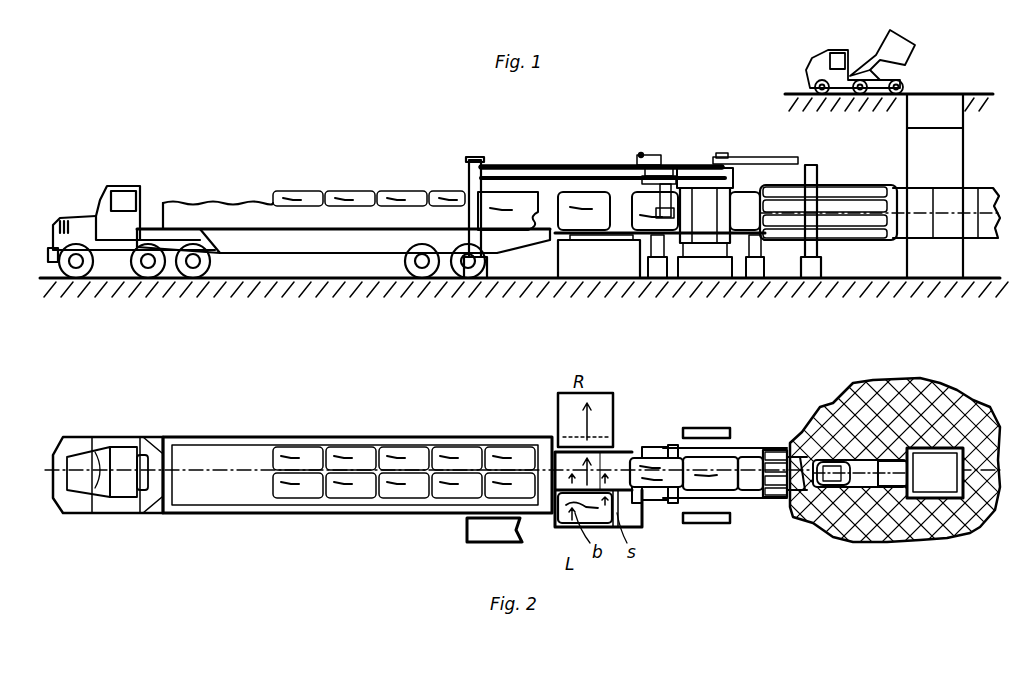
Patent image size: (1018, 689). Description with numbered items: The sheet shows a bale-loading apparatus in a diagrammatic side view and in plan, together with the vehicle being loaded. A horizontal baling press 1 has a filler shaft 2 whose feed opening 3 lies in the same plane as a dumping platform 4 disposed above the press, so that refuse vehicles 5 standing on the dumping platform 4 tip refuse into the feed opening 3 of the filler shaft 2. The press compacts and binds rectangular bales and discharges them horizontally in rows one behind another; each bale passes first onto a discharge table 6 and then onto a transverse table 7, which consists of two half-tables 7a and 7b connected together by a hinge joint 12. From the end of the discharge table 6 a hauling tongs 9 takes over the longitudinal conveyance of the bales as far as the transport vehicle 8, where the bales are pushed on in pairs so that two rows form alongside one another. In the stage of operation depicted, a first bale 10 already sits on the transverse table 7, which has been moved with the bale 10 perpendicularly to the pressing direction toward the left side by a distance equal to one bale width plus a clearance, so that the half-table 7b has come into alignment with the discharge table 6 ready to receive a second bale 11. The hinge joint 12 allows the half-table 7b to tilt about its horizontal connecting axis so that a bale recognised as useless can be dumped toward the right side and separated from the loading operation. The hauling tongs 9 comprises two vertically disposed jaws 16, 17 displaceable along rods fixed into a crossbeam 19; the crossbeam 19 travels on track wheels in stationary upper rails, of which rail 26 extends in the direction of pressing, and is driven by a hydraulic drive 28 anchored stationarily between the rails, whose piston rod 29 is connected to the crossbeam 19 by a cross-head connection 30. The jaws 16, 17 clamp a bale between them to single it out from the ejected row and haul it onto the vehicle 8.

In FIG. 1, the horizontal baling press 1 is at (858, 192).
In FIG. 2, the horizontal baling press 1 is at (772, 448).
In FIG. 1, the filler shaft 2 is at (962, 156).
In FIG. 2, the filler shaft 2 is at (862, 473).
In FIG. 1, the feed opening 3 is at (928, 92).
In FIG. 2, the feed opening 3 is at (940, 490).
In FIG. 1, the dumping platform 4 is at (797, 92).
In FIG. 2, the dumping platform 4 is at (965, 415).
In FIG. 1, the refuse vehicle 5 is at (827, 63).
In FIG. 1, the discharge table 6 is at (753, 234).
In FIG. 2, the discharge table 6 is at (737, 457).
In FIG. 1, the transverse table 7 is at (607, 226).
In FIG. 2, the transverse table 7 is at (613, 420).
In FIG. 2, the half-table 7a is at (647, 507).
In FIG. 2, the half-table 7b is at (607, 462).
In FIG. 1, the transport vehicle 8 is at (513, 243).
In FIG. 2, the transport vehicle 8 is at (513, 435).
In FIG. 1, the hauling tongs 9 is at (647, 207).
In FIG. 2, the hauling tongs 9 is at (672, 447).
In FIG. 1, the first bale 10 is at (545, 200).
In FIG. 2, the first bale 10 is at (567, 518).
In FIG. 1, the second bale 11 is at (580, 200).
In FIG. 2, the second bale 11 is at (632, 458).
In FIG. 2, the hinge joint 12 is at (642, 507).
In FIG. 2, the jaw 16 is at (643, 455).
In FIG. 1, the jaw 17 is at (690, 170).
In FIG. 2, the jaw 17 is at (665, 500).
In FIG. 1, the crossbeam 19 is at (667, 168).
In FIG. 1, the upper rail 26 is at (585, 173).
In FIG. 1, the hydraulic drive 28 is at (748, 162).
In FIG. 1, the piston rod 29 is at (651, 162).
In FIG. 1, the cross-head connection 30 is at (640, 157).